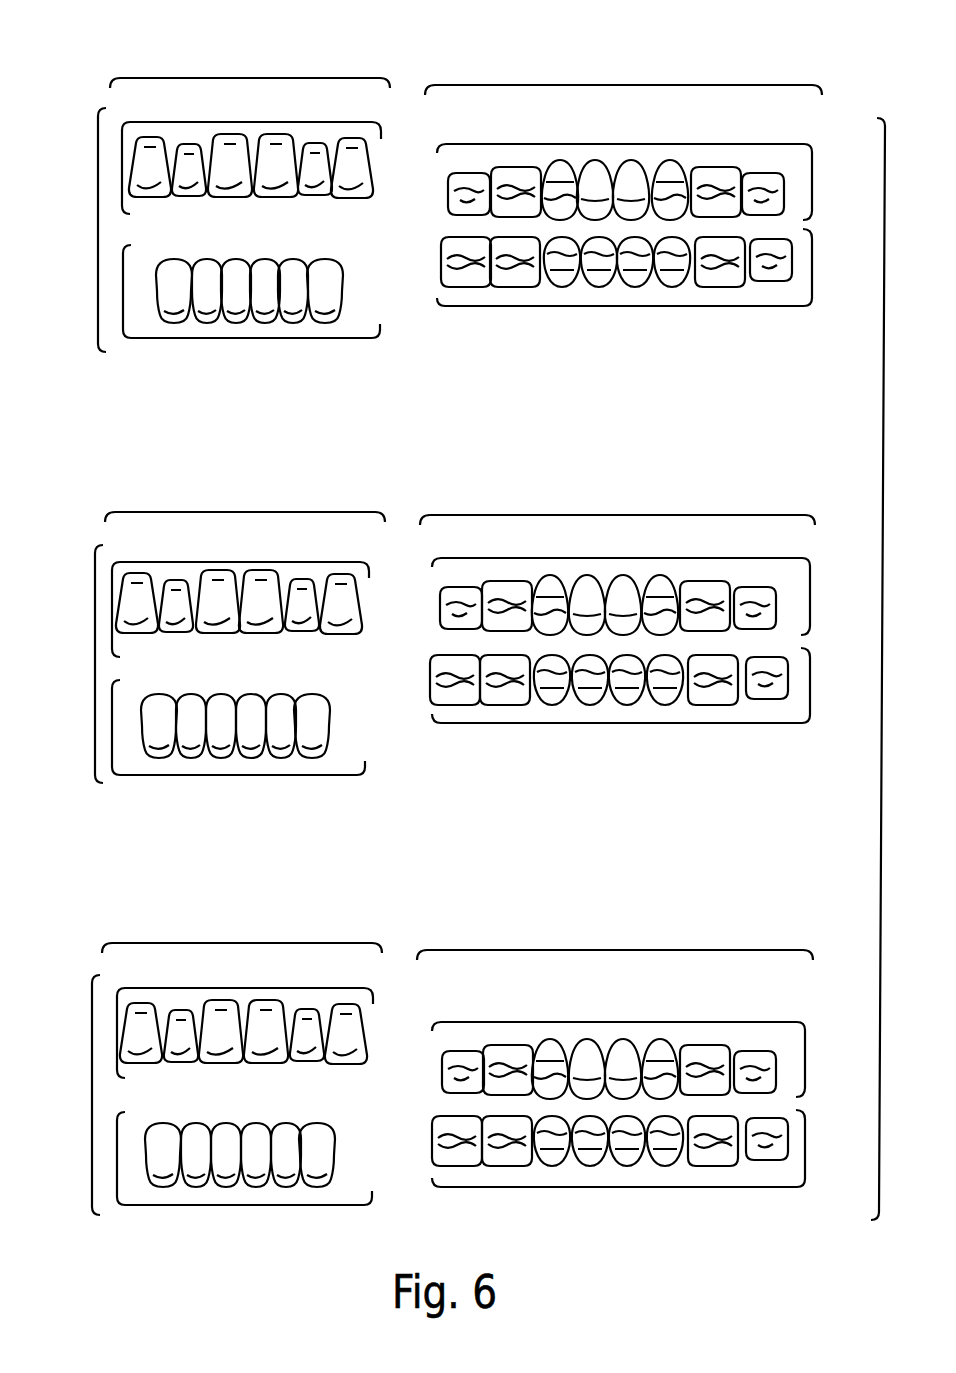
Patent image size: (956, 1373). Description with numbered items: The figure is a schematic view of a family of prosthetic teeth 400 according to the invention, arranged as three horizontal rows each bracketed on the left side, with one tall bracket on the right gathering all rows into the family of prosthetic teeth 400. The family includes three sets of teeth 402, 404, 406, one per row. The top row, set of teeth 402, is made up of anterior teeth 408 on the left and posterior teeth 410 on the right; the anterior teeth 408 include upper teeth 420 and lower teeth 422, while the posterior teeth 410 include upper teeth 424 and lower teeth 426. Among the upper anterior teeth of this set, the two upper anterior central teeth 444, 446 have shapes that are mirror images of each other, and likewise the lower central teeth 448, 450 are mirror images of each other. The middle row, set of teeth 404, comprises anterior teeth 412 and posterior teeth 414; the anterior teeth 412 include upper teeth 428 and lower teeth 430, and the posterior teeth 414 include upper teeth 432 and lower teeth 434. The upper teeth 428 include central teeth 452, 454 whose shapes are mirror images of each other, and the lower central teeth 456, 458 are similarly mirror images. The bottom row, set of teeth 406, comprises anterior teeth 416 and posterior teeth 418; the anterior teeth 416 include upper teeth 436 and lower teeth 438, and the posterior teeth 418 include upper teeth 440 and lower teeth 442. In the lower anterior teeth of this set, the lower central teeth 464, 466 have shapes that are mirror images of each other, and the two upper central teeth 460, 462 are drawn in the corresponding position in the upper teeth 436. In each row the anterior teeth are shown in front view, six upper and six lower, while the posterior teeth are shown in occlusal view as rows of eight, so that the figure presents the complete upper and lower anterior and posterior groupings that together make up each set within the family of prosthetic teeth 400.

The family of prosthetic teeth 400 is at (884, 437).
The set of teeth 402 is at (97, 232).
The set of teeth 404 is at (95, 672).
The set of teeth 406 is at (91, 1100).
The anterior teeth 408 is at (260, 78).
The posterior teeth 410 is at (630, 85).
The anterior teeth 412 is at (251, 512).
The posterior teeth 414 is at (598, 515).
The anterior teeth 416 is at (247, 943).
The posterior teeth 418 is at (610, 950).
The upper teeth 420 is at (211, 150).
The lower teeth 422 is at (211, 313).
The upper teeth 424 is at (814, 194).
The lower teeth 426 is at (818, 284).
The upper teeth 428 is at (202, 590).
The lower teeth 430 is at (200, 751).
The upper teeth 432 is at (812, 608).
The lower teeth 434 is at (815, 672).
The upper teeth 436 is at (201, 1014).
The lower teeth 438 is at (202, 1181).
The upper teeth 440 is at (807, 1070).
The lower teeth 442 is at (812, 1166).
The upper anterior central tooth 444 is at (232, 160).
The upper anterior central tooth 446 is at (272, 158).
The lower central tooth 448 is at (238, 300).
The lower central tooth 450 is at (266, 300).
The central tooth 452 is at (218, 595).
The central tooth 454 is at (262, 600).
The lower central tooth 456 is at (224, 760).
The lower central tooth 458 is at (254, 760).
The upper left central incisor 460 is at (223, 1025).
The upper right central incisor 462 is at (265, 1033).
The lower central tooth 464 is at (232, 1163).
The lower central tooth 466 is at (258, 1165).